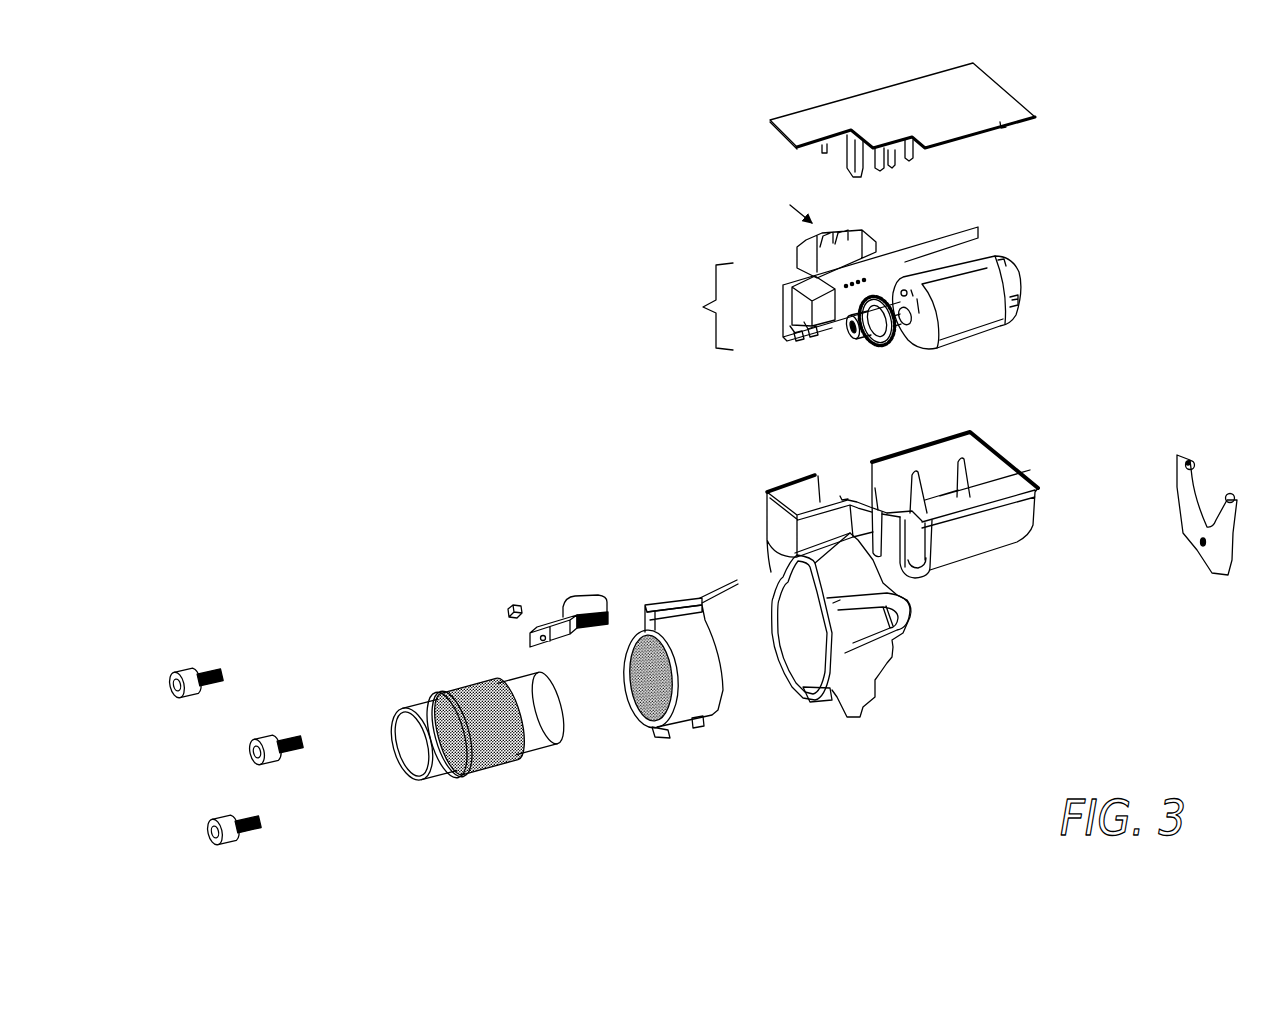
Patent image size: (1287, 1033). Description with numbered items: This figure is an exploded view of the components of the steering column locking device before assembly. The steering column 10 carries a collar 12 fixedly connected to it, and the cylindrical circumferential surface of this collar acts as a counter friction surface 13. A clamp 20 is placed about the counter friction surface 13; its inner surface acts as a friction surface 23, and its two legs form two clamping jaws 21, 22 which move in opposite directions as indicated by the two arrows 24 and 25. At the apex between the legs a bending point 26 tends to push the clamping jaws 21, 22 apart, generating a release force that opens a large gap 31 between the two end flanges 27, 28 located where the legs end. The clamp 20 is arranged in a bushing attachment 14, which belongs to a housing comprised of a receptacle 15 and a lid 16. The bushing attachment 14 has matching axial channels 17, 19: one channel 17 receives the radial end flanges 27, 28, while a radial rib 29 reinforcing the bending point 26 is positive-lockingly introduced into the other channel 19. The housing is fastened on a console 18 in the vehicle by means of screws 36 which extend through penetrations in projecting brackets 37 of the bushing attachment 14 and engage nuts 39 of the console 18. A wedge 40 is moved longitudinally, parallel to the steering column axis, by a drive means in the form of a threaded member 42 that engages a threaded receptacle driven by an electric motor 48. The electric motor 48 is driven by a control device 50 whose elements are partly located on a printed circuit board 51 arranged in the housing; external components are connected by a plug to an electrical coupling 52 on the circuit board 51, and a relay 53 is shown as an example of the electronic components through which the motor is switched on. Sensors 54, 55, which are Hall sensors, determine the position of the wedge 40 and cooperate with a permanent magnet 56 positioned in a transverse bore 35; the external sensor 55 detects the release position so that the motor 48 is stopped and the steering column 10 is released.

The steering column 10 is at (477, 742).
The collar 12 is at (451, 778).
The counter friction surface 13 is at (470, 700).
The bushing attachment 14 is at (845, 626).
The receptacle 15 is at (1006, 447).
The lid 16 is at (923, 114).
The axial channel 17 is at (775, 578).
The console 18 is at (1229, 494).
The axial channel 19 is at (803, 703).
The clamp 20 is at (680, 669).
The clamping jaw 21 is at (636, 691).
The clamping jaw 22 is at (705, 688).
The friction surface 23 is at (645, 682).
The arrow 24 is at (664, 578).
The arrow 25 is at (655, 597).
The bending point 26 is at (650, 737).
The end flange 27 is at (702, 594).
The end flange 28 is at (690, 618).
The radial rib 29 is at (698, 723).
The gap 31 is at (740, 583).
The transverse bore 35 is at (545, 641).
The screws 36 is at (203, 668).
The projecting brackets 37 is at (915, 625).
The nuts 39 is at (1178, 455).
The wedge 40 is at (569, 603).
The threaded member 42 is at (583, 596).
The electric motor 48 is at (960, 315).
The control device 50 is at (841, 287).
The printed circuit board 51 is at (955, 247).
The electrical coupling 52 is at (807, 254).
The relay 53 is at (800, 303).
The sensor 54 is at (800, 345).
The sensor 55 is at (815, 340).
The permanent magnet 56 is at (512, 605).